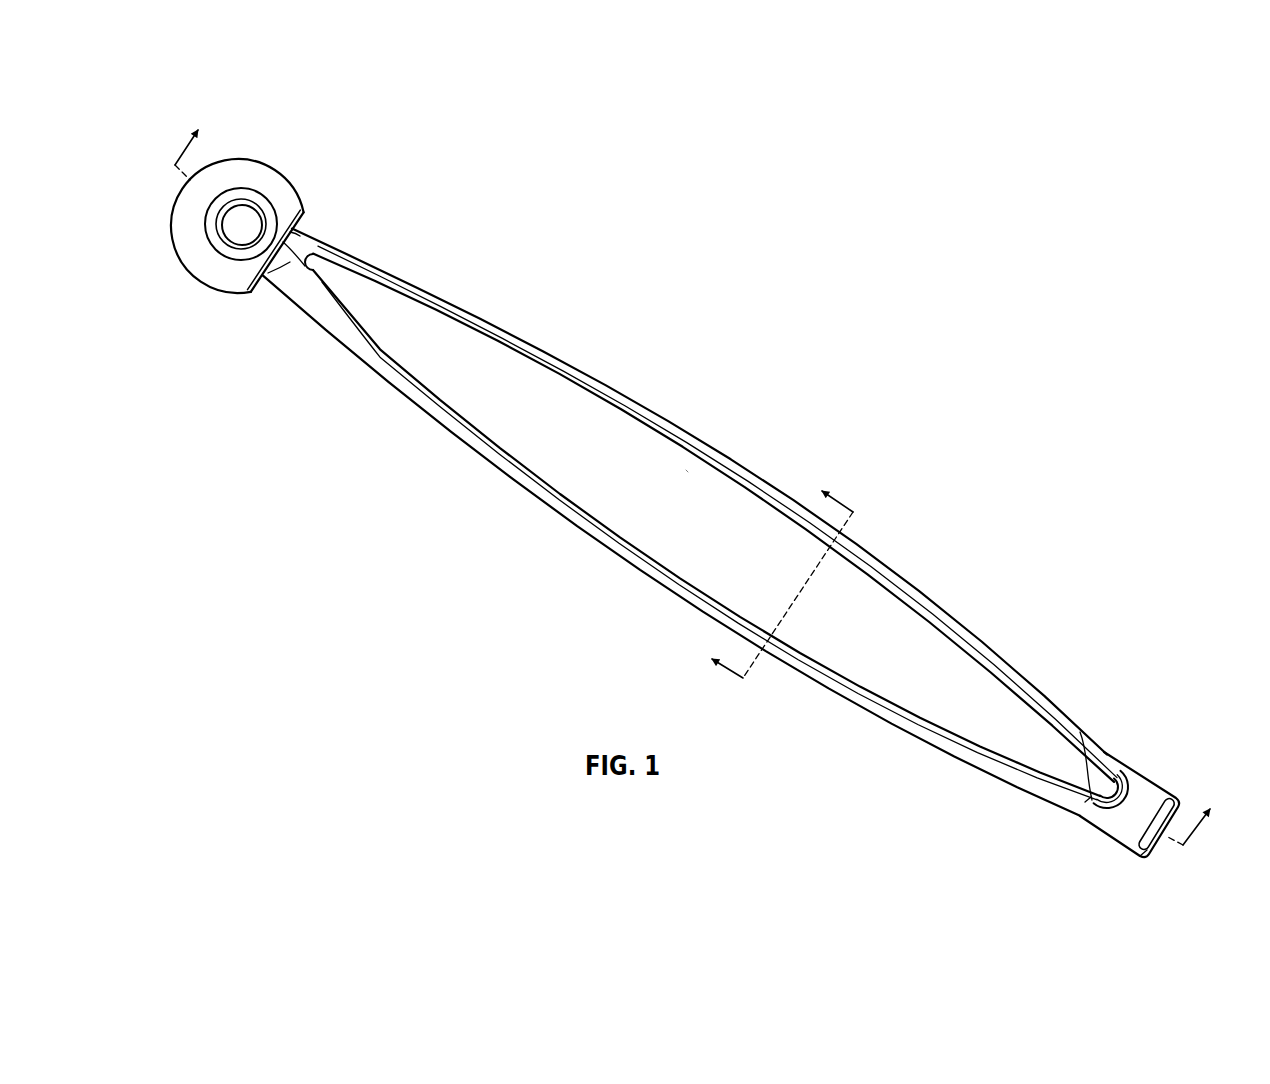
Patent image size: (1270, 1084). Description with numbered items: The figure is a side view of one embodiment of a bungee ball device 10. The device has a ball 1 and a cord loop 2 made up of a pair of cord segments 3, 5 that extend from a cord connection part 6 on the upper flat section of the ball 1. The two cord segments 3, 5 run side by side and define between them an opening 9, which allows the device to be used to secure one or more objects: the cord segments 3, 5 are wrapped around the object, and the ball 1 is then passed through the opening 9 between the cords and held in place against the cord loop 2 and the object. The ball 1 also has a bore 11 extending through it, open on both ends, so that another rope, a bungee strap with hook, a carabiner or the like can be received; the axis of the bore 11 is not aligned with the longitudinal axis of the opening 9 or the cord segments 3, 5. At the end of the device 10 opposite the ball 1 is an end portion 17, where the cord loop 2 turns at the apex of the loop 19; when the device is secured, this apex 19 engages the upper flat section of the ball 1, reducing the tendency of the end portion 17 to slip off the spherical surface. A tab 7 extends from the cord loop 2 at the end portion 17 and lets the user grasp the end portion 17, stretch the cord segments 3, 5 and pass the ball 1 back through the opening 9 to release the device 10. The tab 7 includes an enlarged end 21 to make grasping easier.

The bungee ball device 10 is at (815, 197).
The ball 1 is at (270, 159).
The bore 11 is at (243, 222).
The cord connection part 6 is at (271, 293).
The cord loop 2 is at (898, 534).
The cord segment 3 is at (498, 322).
The cord segment 5 is at (470, 422).
The opening 9 is at (682, 477).
The end portion 17 is at (1141, 717).
The apex of the loop 19 is at (1100, 793).
The tab 7 is at (1168, 776).
The enlarged end 21 is at (1144, 857).